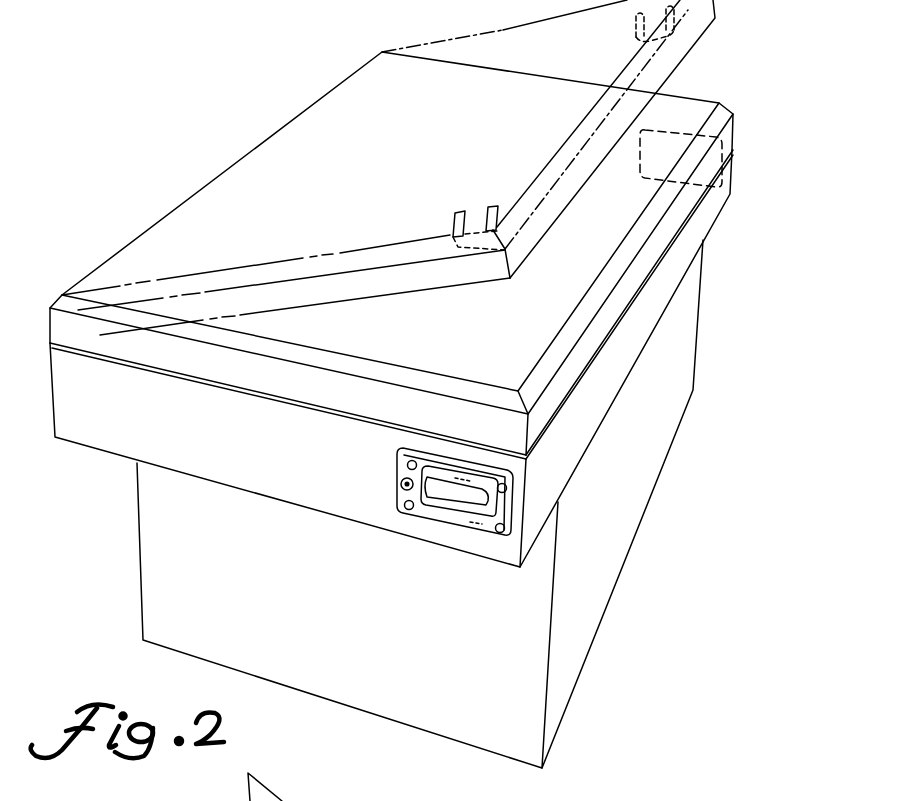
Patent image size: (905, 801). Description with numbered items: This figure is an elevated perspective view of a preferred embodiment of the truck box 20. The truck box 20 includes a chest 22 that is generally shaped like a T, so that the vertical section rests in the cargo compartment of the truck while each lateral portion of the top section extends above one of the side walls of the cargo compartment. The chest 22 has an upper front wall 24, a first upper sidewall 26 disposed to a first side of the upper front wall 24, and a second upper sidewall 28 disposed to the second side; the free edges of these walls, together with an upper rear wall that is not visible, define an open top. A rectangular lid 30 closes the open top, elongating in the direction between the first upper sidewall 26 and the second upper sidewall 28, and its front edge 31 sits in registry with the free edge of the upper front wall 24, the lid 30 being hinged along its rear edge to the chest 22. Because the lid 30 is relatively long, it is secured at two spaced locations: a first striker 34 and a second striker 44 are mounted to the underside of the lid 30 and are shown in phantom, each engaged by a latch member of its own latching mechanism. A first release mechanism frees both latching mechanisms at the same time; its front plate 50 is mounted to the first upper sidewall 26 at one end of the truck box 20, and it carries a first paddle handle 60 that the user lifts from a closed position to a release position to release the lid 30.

The truck box 20 is at (188, 122).
The chest 22 is at (630, 497).
The upper front wall 24 is at (627, 313).
The first upper sidewall 26 is at (162, 445).
The second upper sidewall 28 is at (670, 128).
The lid 30 is at (503, 30).
The front edge 31 is at (556, 400).
The first striker 34 is at (450, 232).
The second striker 44 is at (630, 30).
The front plate 50 is at (402, 497).
The first paddle handle 60 is at (478, 488).